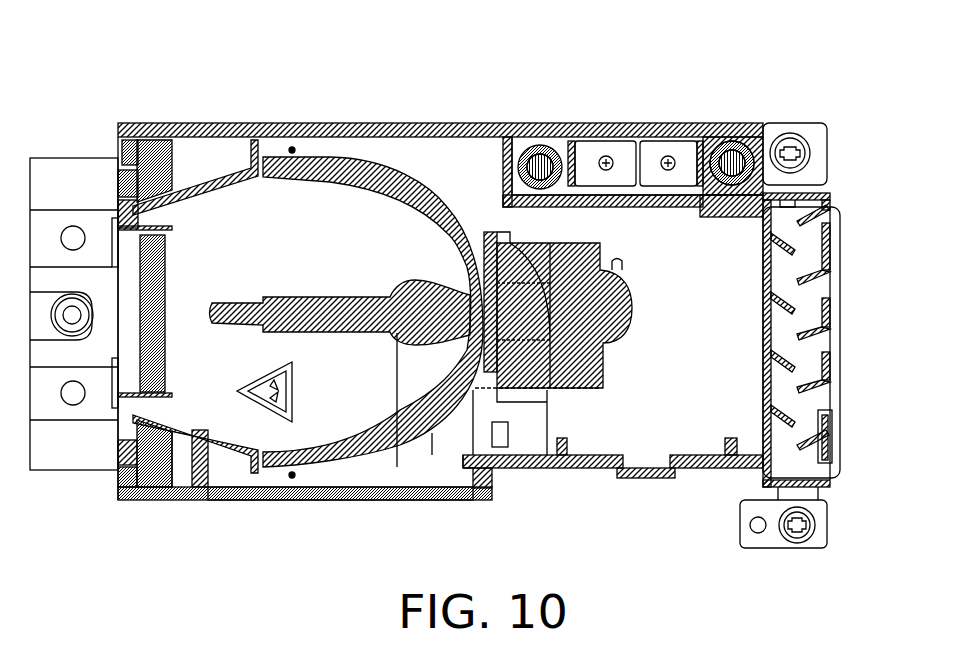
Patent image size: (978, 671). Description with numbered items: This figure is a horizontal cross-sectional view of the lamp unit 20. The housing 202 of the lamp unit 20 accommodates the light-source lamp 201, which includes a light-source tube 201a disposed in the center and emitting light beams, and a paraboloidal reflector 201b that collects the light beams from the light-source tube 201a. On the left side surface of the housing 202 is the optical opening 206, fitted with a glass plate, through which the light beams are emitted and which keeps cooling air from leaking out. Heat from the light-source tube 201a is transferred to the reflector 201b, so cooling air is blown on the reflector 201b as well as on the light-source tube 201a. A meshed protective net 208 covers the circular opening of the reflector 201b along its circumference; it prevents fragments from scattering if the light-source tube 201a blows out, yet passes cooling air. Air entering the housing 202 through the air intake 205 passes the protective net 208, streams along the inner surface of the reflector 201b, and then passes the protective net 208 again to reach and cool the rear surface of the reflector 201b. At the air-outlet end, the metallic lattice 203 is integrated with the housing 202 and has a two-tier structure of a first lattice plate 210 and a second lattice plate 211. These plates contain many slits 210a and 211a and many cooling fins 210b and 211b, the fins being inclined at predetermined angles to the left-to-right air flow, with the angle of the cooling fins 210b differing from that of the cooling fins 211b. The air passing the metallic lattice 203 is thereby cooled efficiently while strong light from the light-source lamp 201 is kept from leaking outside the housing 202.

The lamp unit 20 is at (312, 92).
The light-source lamp 201 is at (310, 222).
The light-source tube 201a is at (445, 282).
The paraboloidal reflector 201b is at (443, 236).
The housing 202 is at (400, 124).
The metallic lattice 203 is at (823, 487).
The air intake 205 is at (232, 488).
The optical opening 206 is at (140, 259).
The protective net 208 is at (208, 186).
The first lattice plate 210 is at (763, 275).
The slits 210a is at (768, 366).
The cooling fins 210b is at (780, 305).
The second lattice plate 211 is at (828, 298).
The slits 211a is at (817, 397).
The cooling fins 211b is at (813, 332).